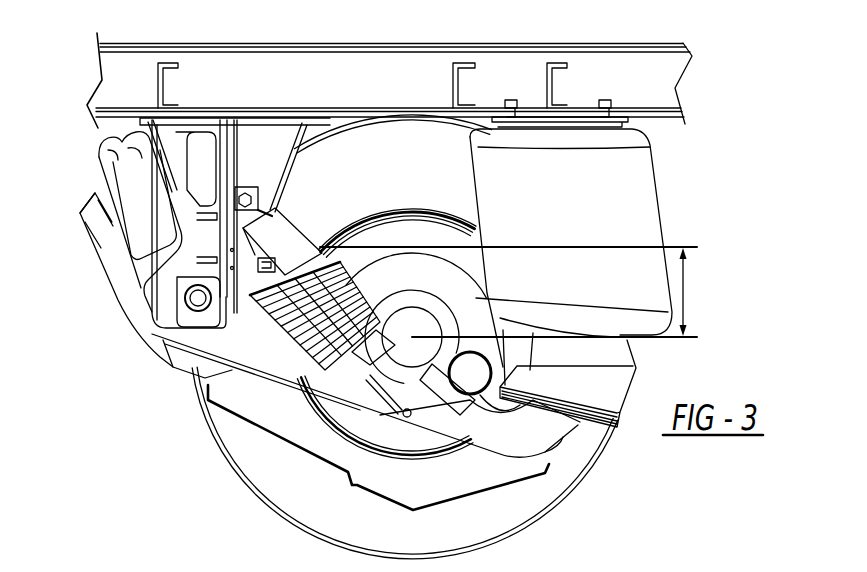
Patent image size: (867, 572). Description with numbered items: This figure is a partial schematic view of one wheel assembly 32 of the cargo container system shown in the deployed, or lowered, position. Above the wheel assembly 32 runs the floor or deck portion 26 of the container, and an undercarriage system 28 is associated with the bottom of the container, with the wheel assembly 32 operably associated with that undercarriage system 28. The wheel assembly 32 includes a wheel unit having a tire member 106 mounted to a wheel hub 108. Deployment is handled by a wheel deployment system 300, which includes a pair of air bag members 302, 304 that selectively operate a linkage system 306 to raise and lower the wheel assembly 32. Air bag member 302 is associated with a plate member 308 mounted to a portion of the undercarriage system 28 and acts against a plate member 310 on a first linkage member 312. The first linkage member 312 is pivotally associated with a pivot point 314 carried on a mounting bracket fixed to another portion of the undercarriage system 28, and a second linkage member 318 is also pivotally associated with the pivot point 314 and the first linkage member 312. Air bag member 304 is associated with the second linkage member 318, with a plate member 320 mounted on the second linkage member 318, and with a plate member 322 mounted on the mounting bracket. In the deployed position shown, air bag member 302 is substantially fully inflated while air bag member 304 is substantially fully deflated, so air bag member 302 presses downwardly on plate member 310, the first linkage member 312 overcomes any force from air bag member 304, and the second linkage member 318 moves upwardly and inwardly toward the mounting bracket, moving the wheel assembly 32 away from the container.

The floor or deck portion 26 is at (563, 38).
The undercarriage system 28 is at (81, 81).
The wheel assembly 32 is at (179, 407).
The tire member 106 is at (205, 453).
The wheel hub 108 is at (387, 436).
The wheel deployment system 300 is at (717, 346).
The air bag member 302 is at (668, 149).
The air bag member 304 is at (85, 153).
The linkage system 306 is at (378, 451).
The plate member 308 is at (579, 114).
The plate member 310 is at (599, 432).
The first linkage member 312 is at (566, 462).
The pivot point 314 is at (193, 310).
The second linkage member 318 is at (87, 258).
The plate member 320 is at (90, 183).
The plate member 322 is at (166, 128).